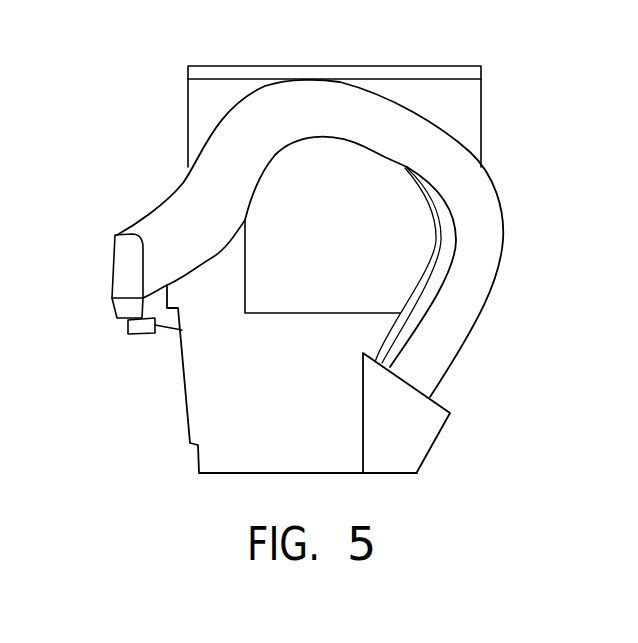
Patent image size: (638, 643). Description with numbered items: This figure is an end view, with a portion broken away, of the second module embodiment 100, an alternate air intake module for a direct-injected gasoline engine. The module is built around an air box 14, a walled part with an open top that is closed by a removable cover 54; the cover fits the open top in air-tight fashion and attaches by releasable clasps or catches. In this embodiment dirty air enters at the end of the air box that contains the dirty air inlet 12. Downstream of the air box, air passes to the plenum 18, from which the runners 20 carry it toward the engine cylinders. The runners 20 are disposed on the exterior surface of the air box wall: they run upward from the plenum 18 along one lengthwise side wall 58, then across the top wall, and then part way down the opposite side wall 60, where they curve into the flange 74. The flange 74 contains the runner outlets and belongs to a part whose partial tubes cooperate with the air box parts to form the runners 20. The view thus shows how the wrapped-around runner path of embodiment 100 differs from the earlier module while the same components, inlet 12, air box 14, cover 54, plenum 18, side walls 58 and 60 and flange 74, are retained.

The second module embodiment 100 is at (146, 129).
The dirty air inlet 12 is at (318, 242).
The air box 14 is at (488, 97).
The plenum 18 is at (410, 440).
The runners 20 is at (460, 147).
The removable cover 54 is at (410, 62).
The side wall 58 is at (432, 223).
The side wall 60 is at (250, 220).
The flange 74 is at (112, 276).